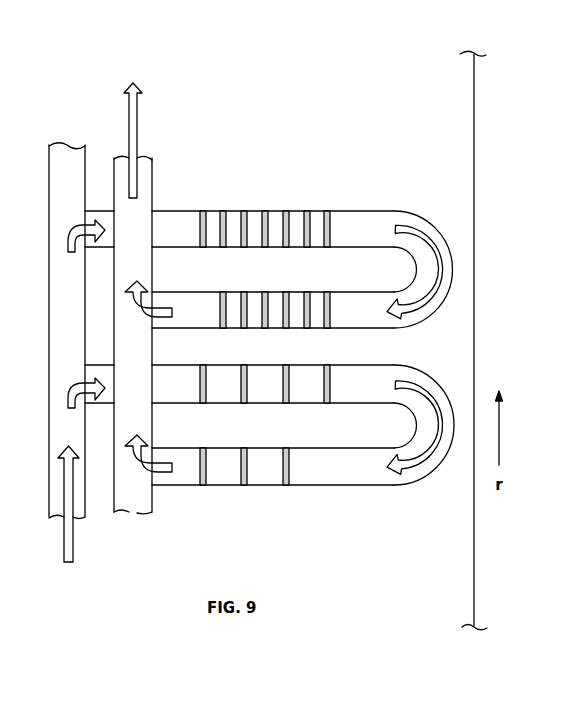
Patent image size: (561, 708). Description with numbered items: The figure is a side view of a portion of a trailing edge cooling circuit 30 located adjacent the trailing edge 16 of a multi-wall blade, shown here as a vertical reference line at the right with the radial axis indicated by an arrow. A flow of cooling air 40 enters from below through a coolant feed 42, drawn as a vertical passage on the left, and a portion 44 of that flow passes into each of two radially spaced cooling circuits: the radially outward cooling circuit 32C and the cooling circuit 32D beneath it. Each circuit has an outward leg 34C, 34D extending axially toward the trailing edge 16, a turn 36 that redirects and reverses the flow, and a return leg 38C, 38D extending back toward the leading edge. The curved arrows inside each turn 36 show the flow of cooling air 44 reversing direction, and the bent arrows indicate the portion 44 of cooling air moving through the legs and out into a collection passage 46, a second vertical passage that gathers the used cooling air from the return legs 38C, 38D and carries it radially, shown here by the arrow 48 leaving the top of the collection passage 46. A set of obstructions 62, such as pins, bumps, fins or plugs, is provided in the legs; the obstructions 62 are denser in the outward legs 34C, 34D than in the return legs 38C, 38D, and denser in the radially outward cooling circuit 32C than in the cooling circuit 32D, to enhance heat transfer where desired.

The trailing edge 16 is at (494, 571).
The trailing edge cooling circuit 30 is at (222, 74).
The radially outward cooling circuit 32C is at (368, 191).
The cooling circuit 32D is at (367, 503).
The outward leg 34C is at (173, 210).
The outward leg 34D is at (217, 364).
The turn 36 is at (442, 238).
The return leg 38C is at (370, 330).
The return leg 38D is at (173, 487).
The flow of cooling air 40 is at (73, 541).
The coolant feed 42 is at (68, 144).
The portion of the flow of cooling air 44 is at (83, 226).
The collection passage 46 is at (153, 173).
The outlet flow 48 is at (138, 118).
The obstructions 62 is at (247, 248).